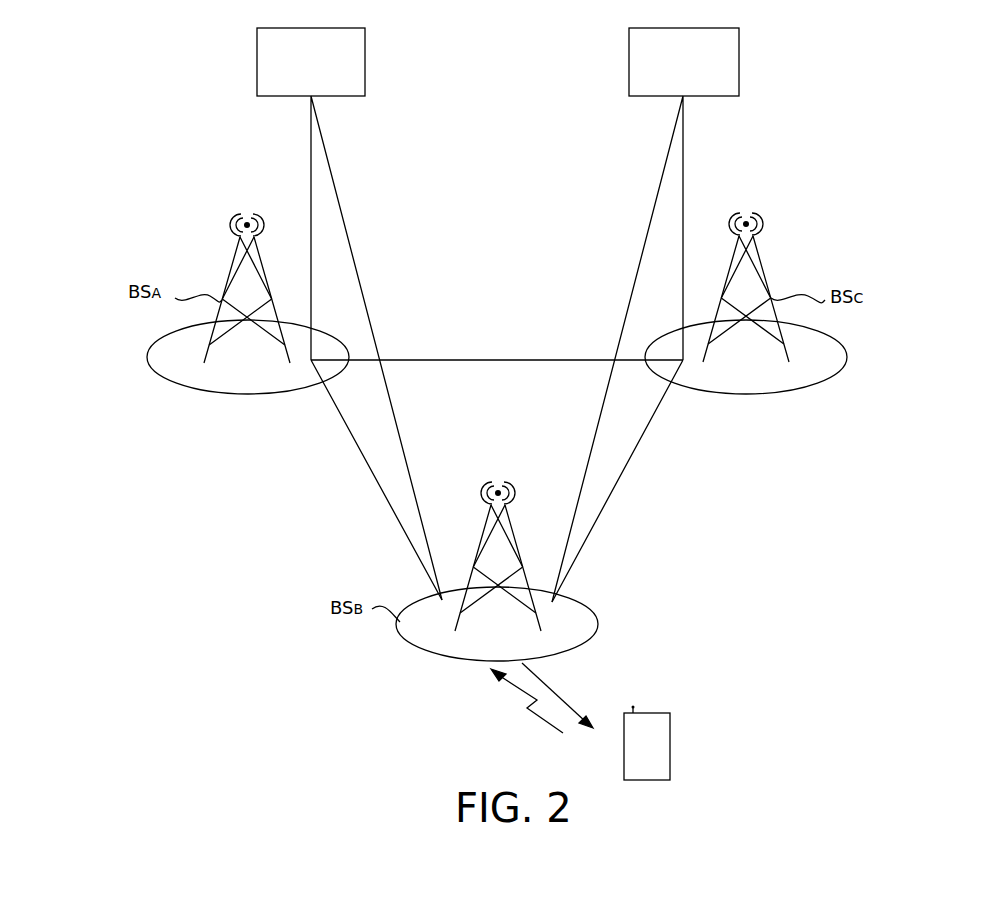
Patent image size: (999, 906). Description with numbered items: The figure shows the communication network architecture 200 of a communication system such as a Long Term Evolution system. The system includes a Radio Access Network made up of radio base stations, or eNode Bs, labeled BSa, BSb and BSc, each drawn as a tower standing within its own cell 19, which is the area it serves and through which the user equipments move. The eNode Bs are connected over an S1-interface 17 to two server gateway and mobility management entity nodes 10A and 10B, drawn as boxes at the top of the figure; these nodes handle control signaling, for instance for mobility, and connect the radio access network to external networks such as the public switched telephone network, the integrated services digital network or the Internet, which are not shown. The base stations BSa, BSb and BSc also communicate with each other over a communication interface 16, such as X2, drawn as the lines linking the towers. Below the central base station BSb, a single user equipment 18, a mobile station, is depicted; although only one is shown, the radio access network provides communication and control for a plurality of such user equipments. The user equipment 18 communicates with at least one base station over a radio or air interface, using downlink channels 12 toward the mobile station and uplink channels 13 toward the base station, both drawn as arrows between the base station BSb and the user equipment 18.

The server gateway and mobility management entity node 10A is at (292, 73).
The server gateway and mobility management entity node 10B is at (665, 73).
The S1-interface 17 is at (309, 183).
The communication interface 16 is at (488, 358).
The cell 19 is at (147, 356).
The downlink channels 12 is at (541, 690).
The uplink channels 13 is at (530, 700).
The user equipment 18 is at (670, 745).
The wireless communication system 200 is at (847, 779).